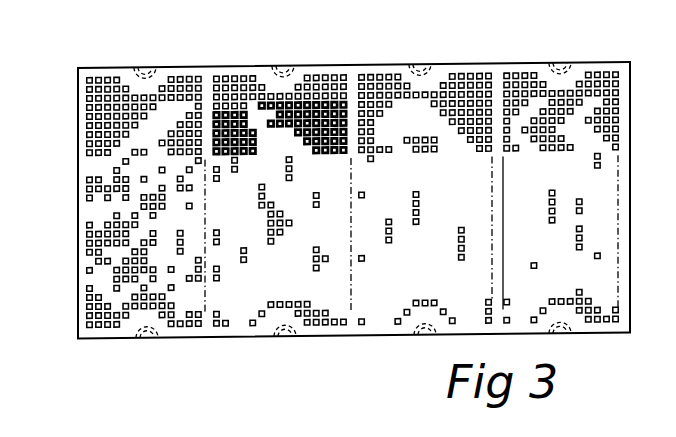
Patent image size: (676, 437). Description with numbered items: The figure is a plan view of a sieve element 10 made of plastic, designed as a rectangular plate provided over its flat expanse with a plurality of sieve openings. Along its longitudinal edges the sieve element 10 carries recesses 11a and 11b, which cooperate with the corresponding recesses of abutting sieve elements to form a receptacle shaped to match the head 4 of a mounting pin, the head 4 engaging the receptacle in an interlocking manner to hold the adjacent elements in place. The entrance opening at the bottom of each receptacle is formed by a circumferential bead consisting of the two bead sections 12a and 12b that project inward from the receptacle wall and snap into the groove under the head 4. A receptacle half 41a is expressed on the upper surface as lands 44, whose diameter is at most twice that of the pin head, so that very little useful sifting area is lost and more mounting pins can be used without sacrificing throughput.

The sieve element 10 is at (72, 82).
The lands 44 is at (130, 83).
The recess 11a is at (419, 67).
The bead section 12a is at (426, 66).
The receptacle half 41a is at (560, 66).
The recess 11b is at (143, 344).
The bead section 12b is at (148, 345).
The head 4 is at (281, 60).